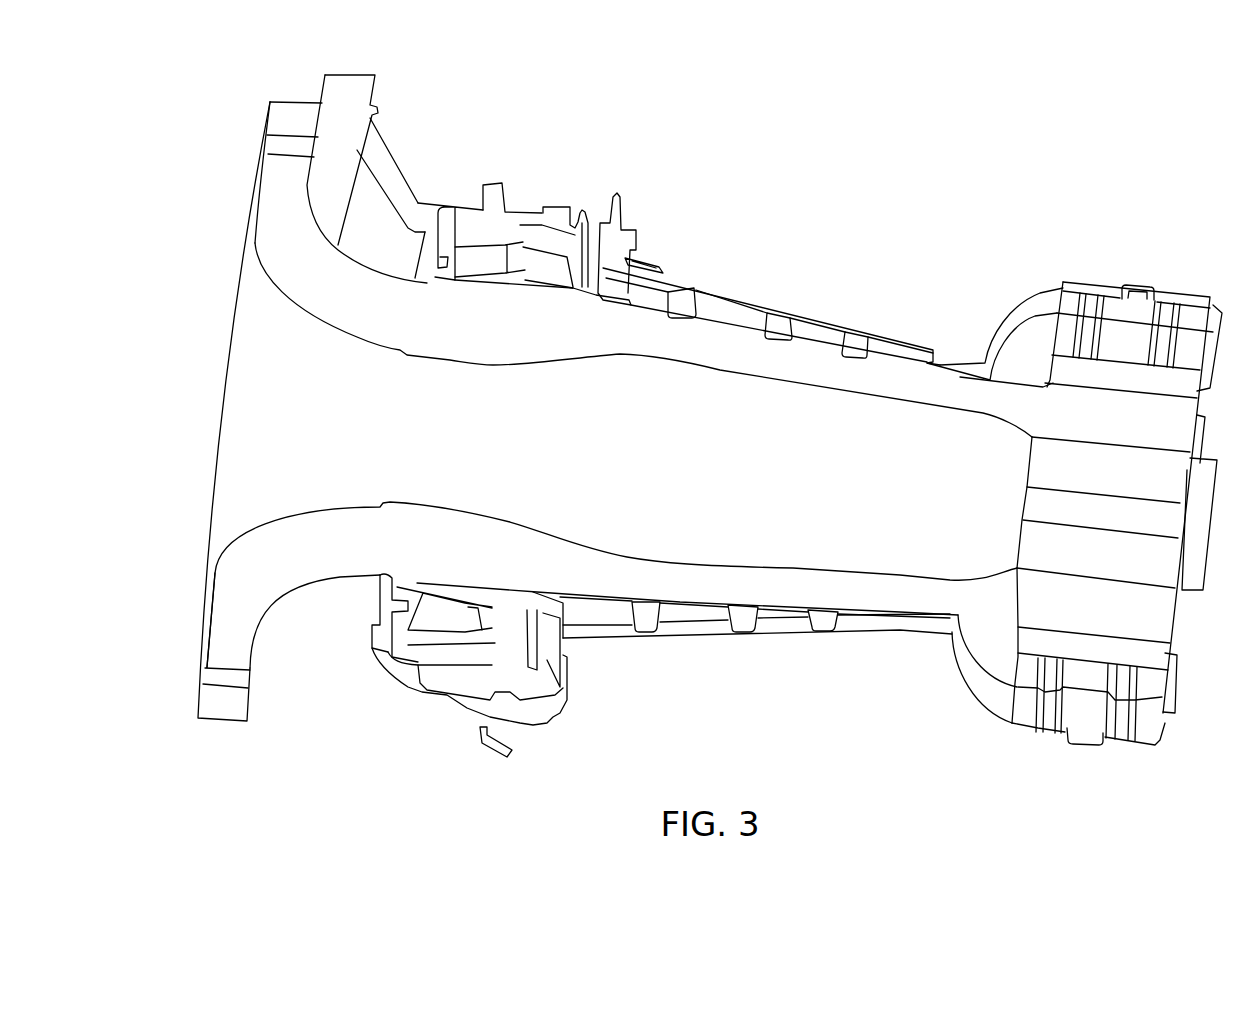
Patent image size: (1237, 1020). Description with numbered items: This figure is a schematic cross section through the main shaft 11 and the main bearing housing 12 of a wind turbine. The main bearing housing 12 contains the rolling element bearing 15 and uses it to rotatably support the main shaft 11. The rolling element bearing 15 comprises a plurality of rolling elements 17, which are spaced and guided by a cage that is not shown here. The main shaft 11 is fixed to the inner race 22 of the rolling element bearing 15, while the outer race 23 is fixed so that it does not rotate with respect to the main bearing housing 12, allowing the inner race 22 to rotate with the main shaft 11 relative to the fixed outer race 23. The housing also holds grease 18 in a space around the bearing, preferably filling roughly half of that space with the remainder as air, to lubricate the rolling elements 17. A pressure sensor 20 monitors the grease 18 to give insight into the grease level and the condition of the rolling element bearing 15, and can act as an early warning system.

The main shaft 11 is at (252, 203).
The main bearing housing 12 is at (522, 128).
The rolling element bearing 15 is at (520, 257).
The rolling elements 17 is at (478, 253).
The grease 18 is at (543, 243).
The pressure sensor 20 is at (413, 688).
The inner race 22 is at (628, 258).
The outer race 23 is at (547, 265).